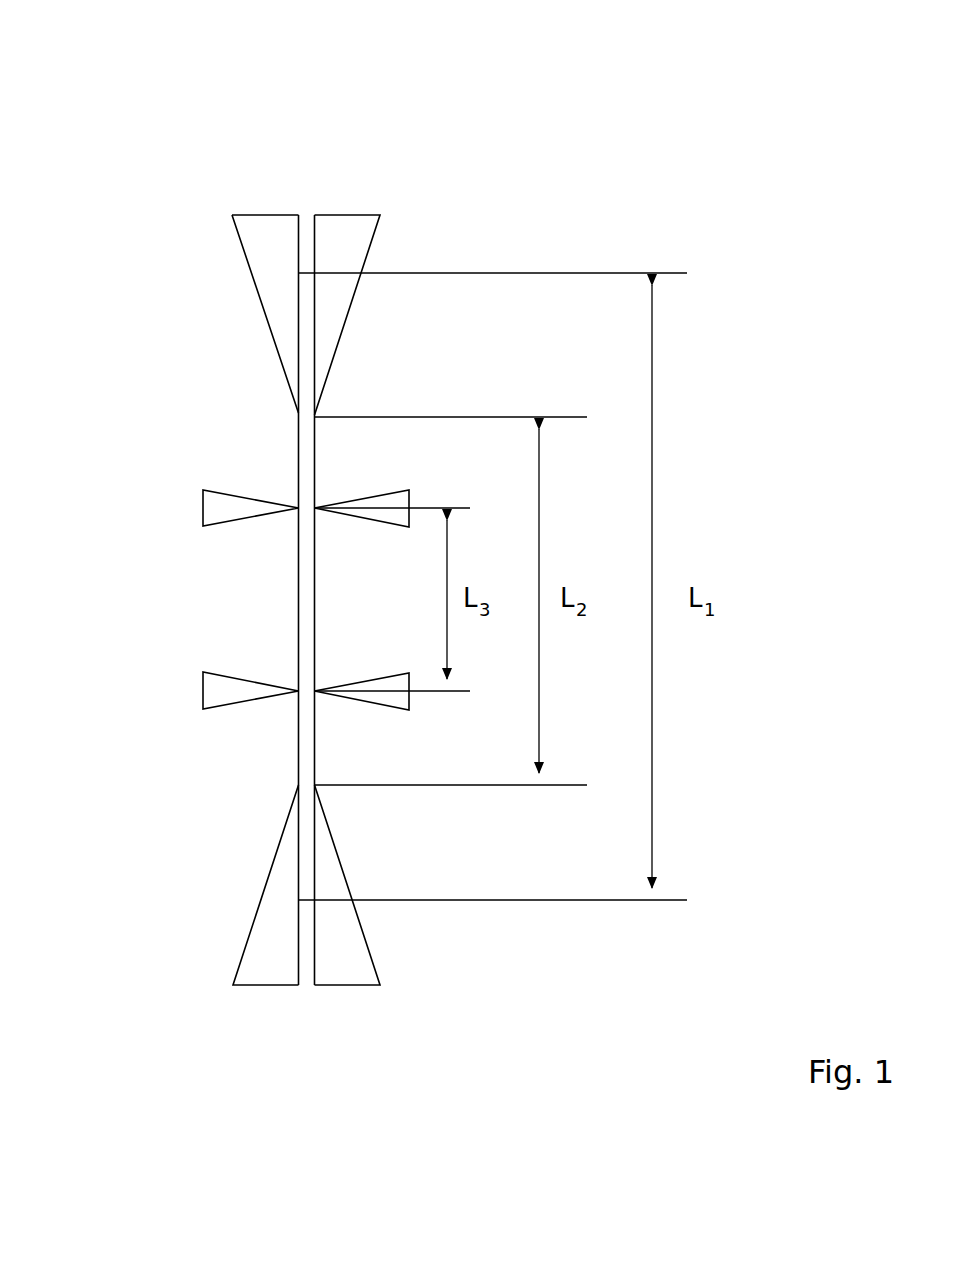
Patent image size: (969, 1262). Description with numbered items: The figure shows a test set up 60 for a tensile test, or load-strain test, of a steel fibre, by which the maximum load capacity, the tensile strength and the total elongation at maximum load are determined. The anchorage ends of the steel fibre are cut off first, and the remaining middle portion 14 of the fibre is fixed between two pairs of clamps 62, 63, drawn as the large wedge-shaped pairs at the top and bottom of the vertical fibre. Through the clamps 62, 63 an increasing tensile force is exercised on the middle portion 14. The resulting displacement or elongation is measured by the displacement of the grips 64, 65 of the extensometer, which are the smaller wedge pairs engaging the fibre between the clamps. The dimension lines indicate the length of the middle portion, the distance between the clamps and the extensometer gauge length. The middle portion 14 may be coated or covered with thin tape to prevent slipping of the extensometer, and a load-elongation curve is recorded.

The test set up 60 is at (552, 121).
The middle portion 14 is at (306, 436).
The clamp 63 is at (346, 237).
The clamp 62 is at (353, 960).
The grip of the extensometer 65 is at (383, 515).
The grip of the extensometer 64 is at (387, 699).